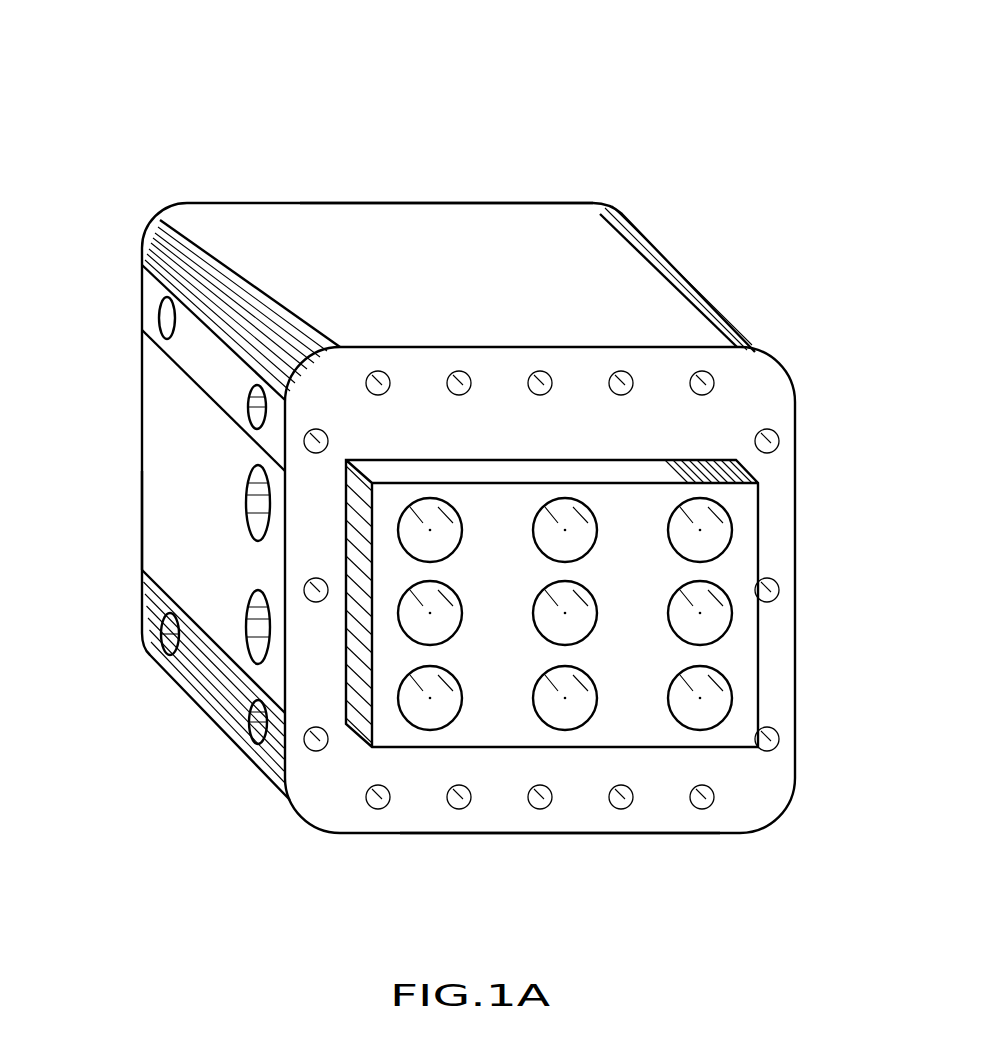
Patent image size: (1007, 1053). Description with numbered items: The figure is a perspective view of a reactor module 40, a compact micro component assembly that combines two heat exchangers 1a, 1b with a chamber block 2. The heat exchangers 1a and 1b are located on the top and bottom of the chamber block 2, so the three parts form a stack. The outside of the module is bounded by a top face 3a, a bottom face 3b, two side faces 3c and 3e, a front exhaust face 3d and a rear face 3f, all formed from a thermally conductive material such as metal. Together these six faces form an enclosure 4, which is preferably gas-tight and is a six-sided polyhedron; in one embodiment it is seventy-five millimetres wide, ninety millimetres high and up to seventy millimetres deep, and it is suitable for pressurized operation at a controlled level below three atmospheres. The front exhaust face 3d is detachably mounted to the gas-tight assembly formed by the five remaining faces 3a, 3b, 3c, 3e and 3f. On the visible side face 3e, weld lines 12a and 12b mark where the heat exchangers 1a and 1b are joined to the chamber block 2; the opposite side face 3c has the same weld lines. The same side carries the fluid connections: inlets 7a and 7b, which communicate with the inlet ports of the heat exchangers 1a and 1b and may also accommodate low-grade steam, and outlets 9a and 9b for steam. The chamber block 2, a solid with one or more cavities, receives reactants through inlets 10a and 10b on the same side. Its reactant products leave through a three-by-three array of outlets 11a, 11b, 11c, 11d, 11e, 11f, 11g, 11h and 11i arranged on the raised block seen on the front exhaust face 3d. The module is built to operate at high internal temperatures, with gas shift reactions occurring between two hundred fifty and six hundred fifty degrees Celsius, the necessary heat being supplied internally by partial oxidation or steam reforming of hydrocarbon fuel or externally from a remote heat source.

The reactor module 40 is at (710, 98).
The chamber block 2 is at (142, 477).
The heat exchanger 1a is at (155, 272).
The heat exchanger 1b is at (198, 678).
The top face 3a is at (566, 210).
The bottom face 3b is at (475, 850).
The side face 3c is at (710, 295).
The front exhaust face 3d is at (582, 813).
The side face 3e is at (142, 528).
The rear face 3f is at (325, 188).
The enclosure 4 is at (410, 210).
The inlet 7a is at (257, 407).
The inlet 7b is at (258, 718).
The outlet 9a is at (167, 318).
The outlet 9b is at (170, 633).
The inlet 10a is at (258, 503).
The inlet 10b is at (258, 627).
The outlet 11a is at (428, 546).
The outlet 11b is at (563, 546).
The outlet 11c is at (698, 546).
The outlet 11d is at (428, 629).
The outlet 11e is at (563, 629).
The outlet 11f is at (698, 629).
The outlet 11g is at (428, 714).
The outlet 11h is at (563, 714).
The outlet 11i is at (698, 714).
The weld line 12a is at (183, 377).
The weld line 12b is at (157, 587).